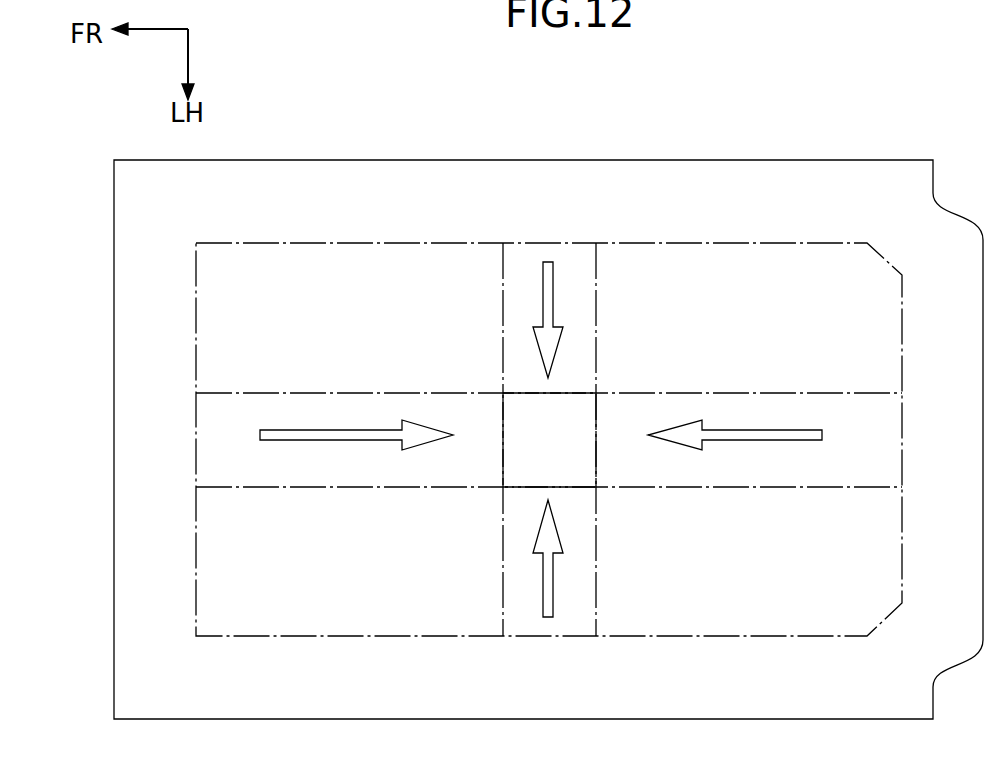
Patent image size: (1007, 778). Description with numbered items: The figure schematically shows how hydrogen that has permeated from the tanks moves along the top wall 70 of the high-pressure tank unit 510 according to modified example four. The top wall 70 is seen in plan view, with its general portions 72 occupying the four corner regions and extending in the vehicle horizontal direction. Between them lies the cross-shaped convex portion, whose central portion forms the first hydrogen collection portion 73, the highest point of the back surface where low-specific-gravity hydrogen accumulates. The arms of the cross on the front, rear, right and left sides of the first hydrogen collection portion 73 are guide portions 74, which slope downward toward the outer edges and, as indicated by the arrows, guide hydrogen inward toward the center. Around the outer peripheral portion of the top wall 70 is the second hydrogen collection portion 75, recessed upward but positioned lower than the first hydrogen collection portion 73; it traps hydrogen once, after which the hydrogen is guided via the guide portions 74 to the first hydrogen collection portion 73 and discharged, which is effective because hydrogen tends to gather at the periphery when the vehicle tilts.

The high-pressure tank unit 510 is at (855, 128).
The top wall 70 is at (787, 160).
The second hydrogen collection portion 75 is at (565, 215).
The general portions 72 is at (344, 331).
The first hydrogen collection portion 73 is at (566, 447).
The guide portions 74 is at (239, 445).